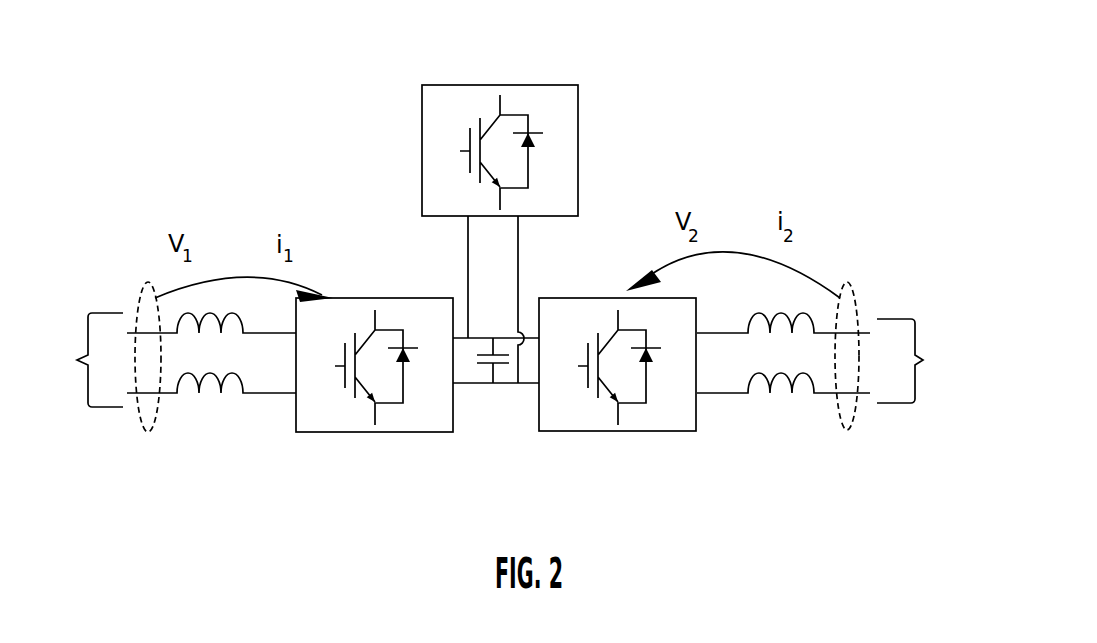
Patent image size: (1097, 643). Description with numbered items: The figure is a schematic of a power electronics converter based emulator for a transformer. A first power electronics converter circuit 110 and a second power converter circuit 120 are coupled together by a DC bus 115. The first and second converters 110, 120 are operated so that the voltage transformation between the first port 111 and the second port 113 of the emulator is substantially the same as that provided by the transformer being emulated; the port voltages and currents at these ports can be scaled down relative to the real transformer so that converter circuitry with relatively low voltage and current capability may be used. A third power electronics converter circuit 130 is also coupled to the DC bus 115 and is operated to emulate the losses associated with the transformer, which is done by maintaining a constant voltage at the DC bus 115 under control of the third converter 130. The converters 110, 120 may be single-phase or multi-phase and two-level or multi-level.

The first power electronics converter circuit 110 is at (275, 472).
The first port 111 is at (83, 360).
The second port 113 is at (919, 361).
The DC bus 115 is at (490, 402).
The second power converter circuit 120 is at (756, 474).
The third power electronics converter circuit 130 is at (345, 117).